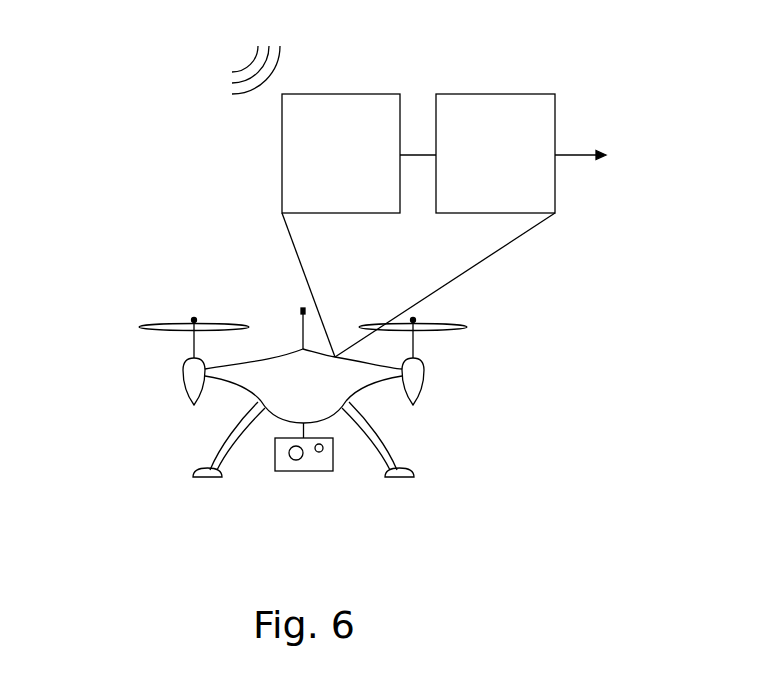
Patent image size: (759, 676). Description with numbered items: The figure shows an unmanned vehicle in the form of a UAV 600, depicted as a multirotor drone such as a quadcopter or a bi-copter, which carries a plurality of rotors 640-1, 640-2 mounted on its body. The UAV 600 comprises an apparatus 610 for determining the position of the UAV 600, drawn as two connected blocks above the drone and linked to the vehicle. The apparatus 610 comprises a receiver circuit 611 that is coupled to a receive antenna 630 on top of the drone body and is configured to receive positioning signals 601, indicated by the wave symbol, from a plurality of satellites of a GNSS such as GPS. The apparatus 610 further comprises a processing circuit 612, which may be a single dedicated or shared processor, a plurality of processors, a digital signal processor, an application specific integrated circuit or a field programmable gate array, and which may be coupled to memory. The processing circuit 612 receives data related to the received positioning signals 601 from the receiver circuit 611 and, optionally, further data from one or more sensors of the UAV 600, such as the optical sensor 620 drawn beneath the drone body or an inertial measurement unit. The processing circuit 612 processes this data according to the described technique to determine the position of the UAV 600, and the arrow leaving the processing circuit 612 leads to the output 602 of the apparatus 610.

The UAV 600 is at (294, 416).
The positioning signals 601 is at (257, 52).
The output 602 is at (623, 156).
The apparatus 610 is at (479, 116).
The receiver circuit 611 is at (341, 153).
The processing circuit 612 is at (495, 153).
The optical sensor 620 is at (304, 472).
The receive antenna 630 is at (301, 311).
The rotor 640-1 is at (165, 325).
The rotor 640-2 is at (462, 325).